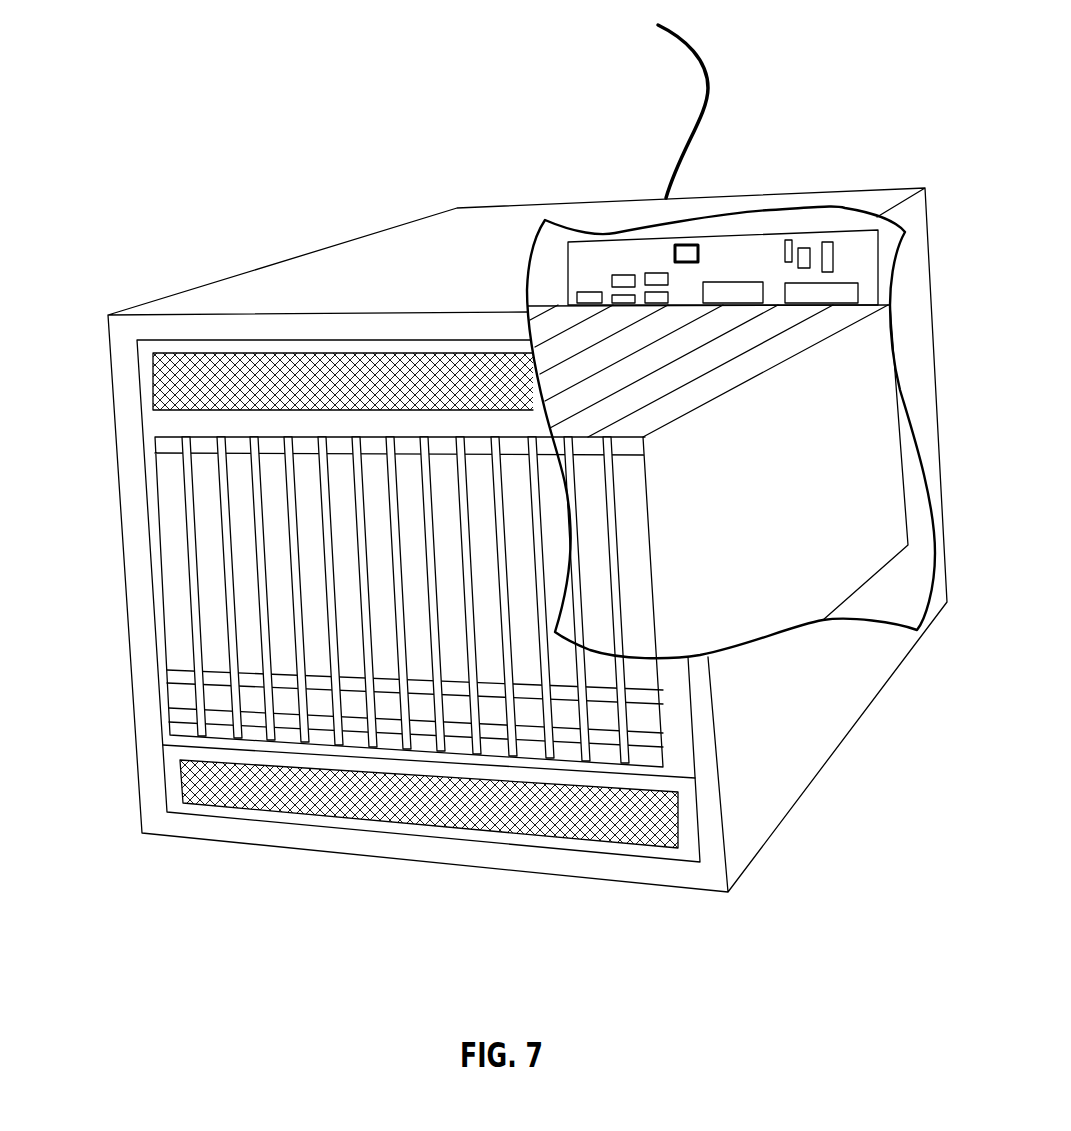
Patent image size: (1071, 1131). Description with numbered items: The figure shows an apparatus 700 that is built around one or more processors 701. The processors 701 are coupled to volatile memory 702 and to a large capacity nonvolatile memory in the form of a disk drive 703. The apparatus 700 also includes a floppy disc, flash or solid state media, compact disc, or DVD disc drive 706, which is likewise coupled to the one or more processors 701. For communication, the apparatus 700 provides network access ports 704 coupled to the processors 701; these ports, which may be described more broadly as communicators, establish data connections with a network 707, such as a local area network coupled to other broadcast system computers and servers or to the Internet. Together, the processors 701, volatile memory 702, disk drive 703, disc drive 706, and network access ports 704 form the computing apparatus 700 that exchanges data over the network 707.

The apparatus 700 is at (190, 87).
The processors 701 is at (730, 292).
The volatile memory 702 is at (843, 293).
The disk drive 703 is at (248, 535).
The network access ports 704 is at (590, 292).
The disc drive 706 is at (217, 592).
The network 707 is at (697, 58).